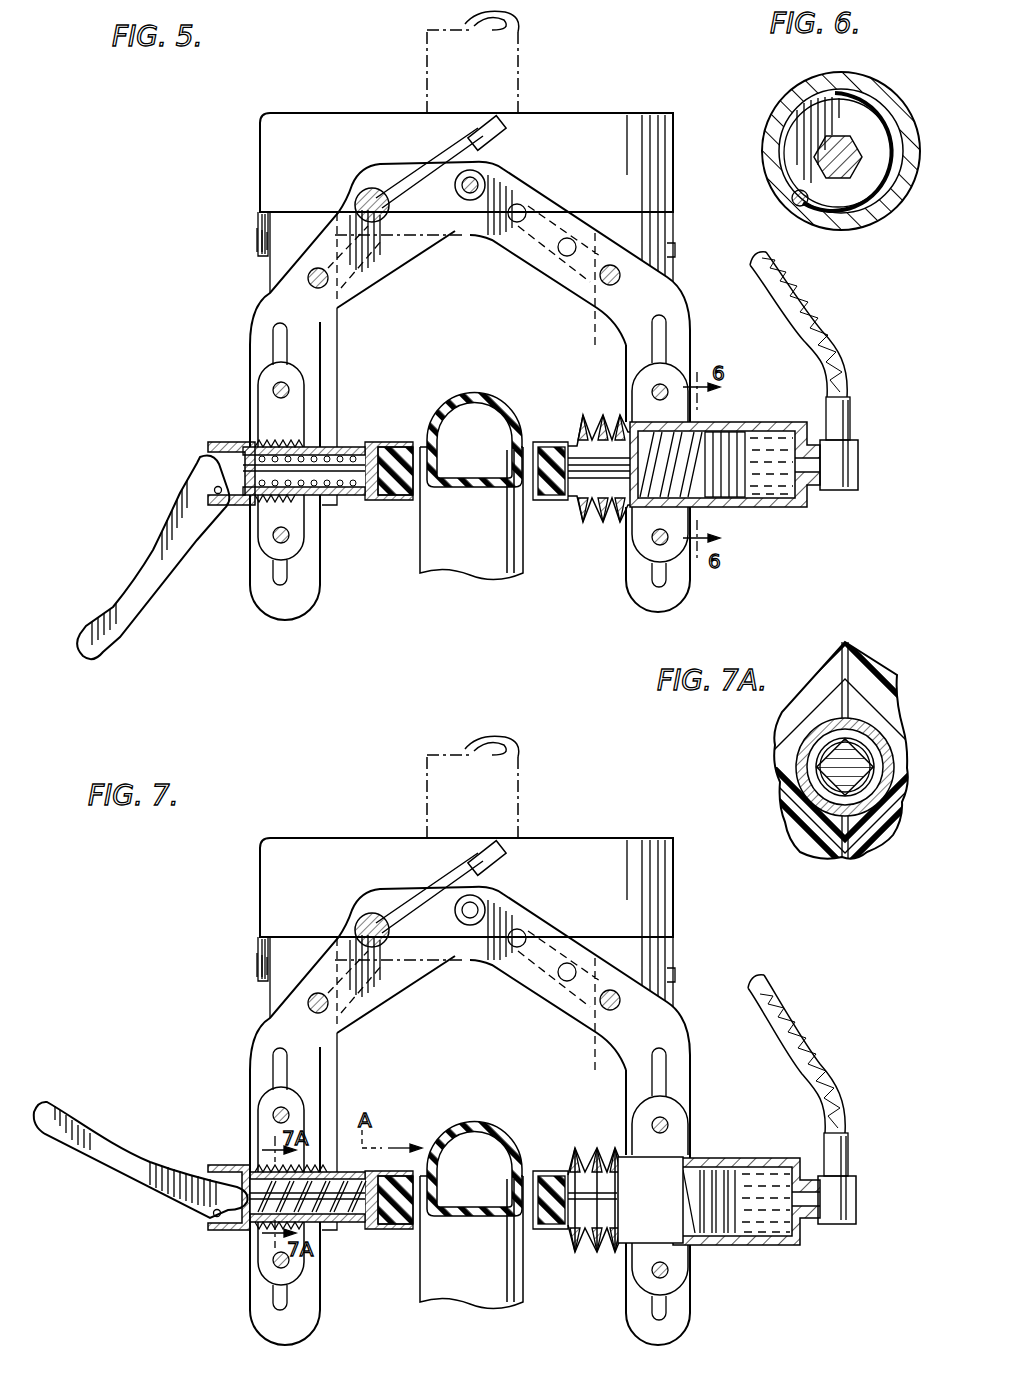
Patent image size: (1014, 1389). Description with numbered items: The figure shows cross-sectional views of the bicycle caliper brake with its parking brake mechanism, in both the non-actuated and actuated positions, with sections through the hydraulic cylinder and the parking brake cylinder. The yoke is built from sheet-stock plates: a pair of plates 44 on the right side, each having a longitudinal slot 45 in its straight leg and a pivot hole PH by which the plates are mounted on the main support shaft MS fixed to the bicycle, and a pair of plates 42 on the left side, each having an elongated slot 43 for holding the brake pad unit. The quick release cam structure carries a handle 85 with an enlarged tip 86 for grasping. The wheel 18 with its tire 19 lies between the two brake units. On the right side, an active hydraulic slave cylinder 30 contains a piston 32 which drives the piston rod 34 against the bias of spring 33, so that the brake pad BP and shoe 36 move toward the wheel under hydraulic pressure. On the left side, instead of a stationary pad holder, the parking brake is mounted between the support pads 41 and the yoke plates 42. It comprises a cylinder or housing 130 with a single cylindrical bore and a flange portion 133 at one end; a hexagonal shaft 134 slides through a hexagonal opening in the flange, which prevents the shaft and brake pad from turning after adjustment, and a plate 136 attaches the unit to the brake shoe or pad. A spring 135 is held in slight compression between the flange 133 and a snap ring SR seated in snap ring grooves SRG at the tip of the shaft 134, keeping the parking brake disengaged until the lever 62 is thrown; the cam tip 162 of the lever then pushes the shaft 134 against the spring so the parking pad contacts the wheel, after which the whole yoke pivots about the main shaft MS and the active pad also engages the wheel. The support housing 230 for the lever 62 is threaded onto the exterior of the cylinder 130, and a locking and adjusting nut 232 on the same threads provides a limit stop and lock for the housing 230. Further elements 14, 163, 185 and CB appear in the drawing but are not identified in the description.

In FIG. 5, the clamp frame plate 14 is at (621, 170).
In FIG. 5, the bicycle wheel 18 is at (481, 536).
In FIG. 7, the bicycle wheel 18 is at (471, 1242).
In FIG. 5, the tire 19 is at (470, 392).
In FIG. 7, the tire 19 is at (474, 1143).
In FIG. 5, the hydraulic slave cylinder 30 is at (775, 424).
In FIG. 6, the hydraulic slave cylinder 30 is at (781, 105).
In FIG. 7, the hydraulic slave cylinder 30 is at (726, 1160).
In FIG. 7, the piston 32 is at (740, 1205).
In FIG. 5, the spring 33 is at (700, 497).
In FIG. 6, the spring 33 is at (862, 226).
In FIG. 5, the piston rod 34 is at (588, 502).
In FIG. 6, the piston rod 34 is at (827, 148).
In FIG. 7, the piston rod 34 is at (595, 1200).
In FIG. 5, the brake shoe 36 is at (380, 500).
In FIG. 5, the support pads 41 is at (297, 521).
In FIG. 7A, the support pads 41 is at (854, 666).
In FIG. 7, the support pads 41 is at (260, 1250).
In FIG. 5, the plates 42 is at (320, 323).
In FIG. 5, the elongated slot 43 is at (276, 348).
In FIG. 5, the plates 44 is at (663, 318).
In FIG. 5, the longitudinal slot 45 is at (668, 342).
In FIG. 5, the lever 62 is at (113, 617).
In FIG. 7, the lever 62 is at (92, 1142).
In FIG. 7, the handle 85 is at (429, 887).
In FIG. 7, the enlarged tip 86 is at (517, 833).
In FIG. 5, the cylinder 130 is at (323, 480).
In FIG. 7A, the cylinder 130 is at (797, 812).
In FIG. 7A, the flange portion 133 is at (880, 792).
In FIG. 5, the hexagonal shaft 134 is at (332, 468).
In FIG. 7A, the hexagonal shaft 134 is at (838, 760).
In FIG. 7, the hexagonal shaft 134 is at (366, 1188).
In FIG. 5, the spring 135 is at (305, 449).
In FIG. 7A, the spring 135 is at (823, 785).
In FIG. 7, the spring 135 is at (326, 1216).
In FIG. 5, the plate 136 is at (372, 442).
In FIG. 7, the plate 136 is at (400, 1159).
In FIG. 5, the cam tip 162 is at (210, 452).
In FIG. 7, the cam tip 162 is at (237, 1195).
In FIG. 7, the lever pivot 163 is at (215, 1215).
In FIG. 7, the pivot pin 185 is at (348, 907).
In FIG. 5, the support housing 230 is at (220, 505).
In FIG. 5, the locking and adjusting nut 232 is at (260, 442).
In FIG. 5, the main support shaft MS is at (487, 177).
In FIG. 7, the main support shaft MS is at (502, 891).
In FIG. 5, the brake pad BP is at (414, 456).
In FIG. 7, the brake pad BP is at (463, 1202).
In FIG. 5, the clamp bolt CB is at (668, 394).
In FIG. 7, the clamp bolt CB is at (650, 1125).
In FIG. 5, the pivot hole PH is at (745, 483).
In FIG. 6, the pivot hole PH is at (855, 205).
In FIG. 5, the snap ring SR is at (247, 455).
In FIG. 5, the snap ring grooves SRG is at (263, 500).